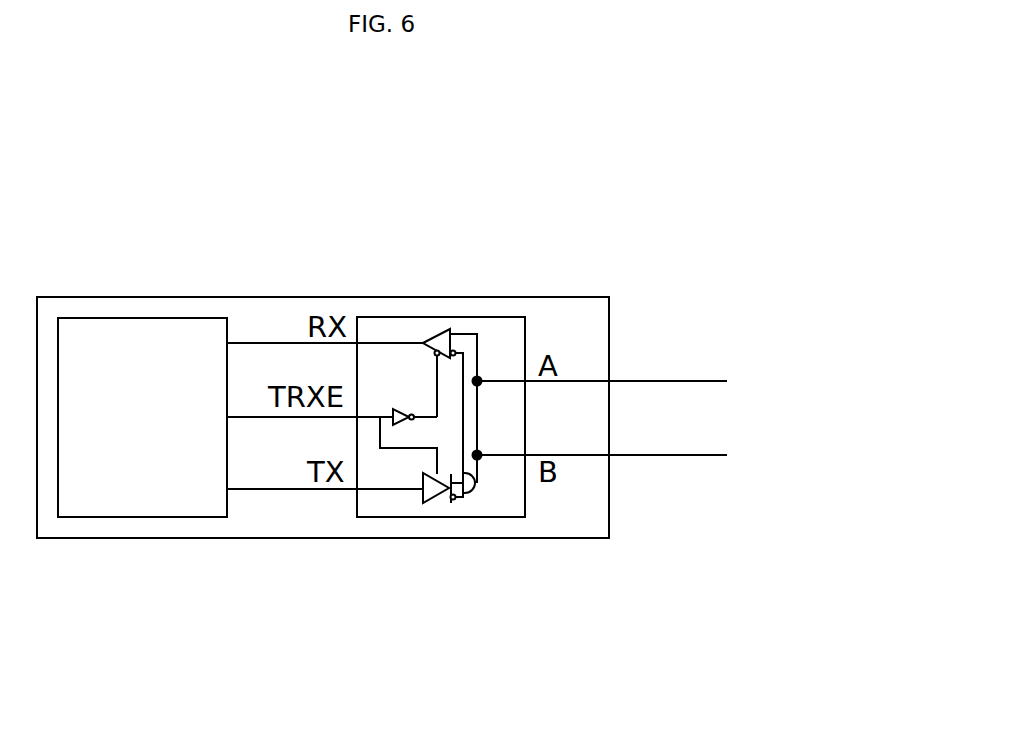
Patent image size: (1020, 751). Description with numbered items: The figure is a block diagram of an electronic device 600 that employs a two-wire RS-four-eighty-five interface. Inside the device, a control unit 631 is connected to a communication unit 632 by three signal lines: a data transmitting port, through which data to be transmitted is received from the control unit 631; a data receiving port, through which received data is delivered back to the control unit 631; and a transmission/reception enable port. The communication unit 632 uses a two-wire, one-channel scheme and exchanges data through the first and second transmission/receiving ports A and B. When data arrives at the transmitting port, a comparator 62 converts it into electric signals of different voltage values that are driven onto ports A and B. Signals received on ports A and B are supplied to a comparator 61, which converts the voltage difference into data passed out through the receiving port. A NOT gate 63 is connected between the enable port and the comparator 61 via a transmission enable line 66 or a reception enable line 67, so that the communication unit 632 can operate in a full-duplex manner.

The electronic device 600 is at (593, 222).
The control unit 631 is at (141, 519).
The communication unit 632 is at (440, 517).
The comparator 61 is at (437, 329).
The comparator 62 is at (420, 499).
The NOT gate 63 is at (400, 407).
The transmission enable line 66 is at (400, 449).
The reception enable line 67 is at (437, 386).